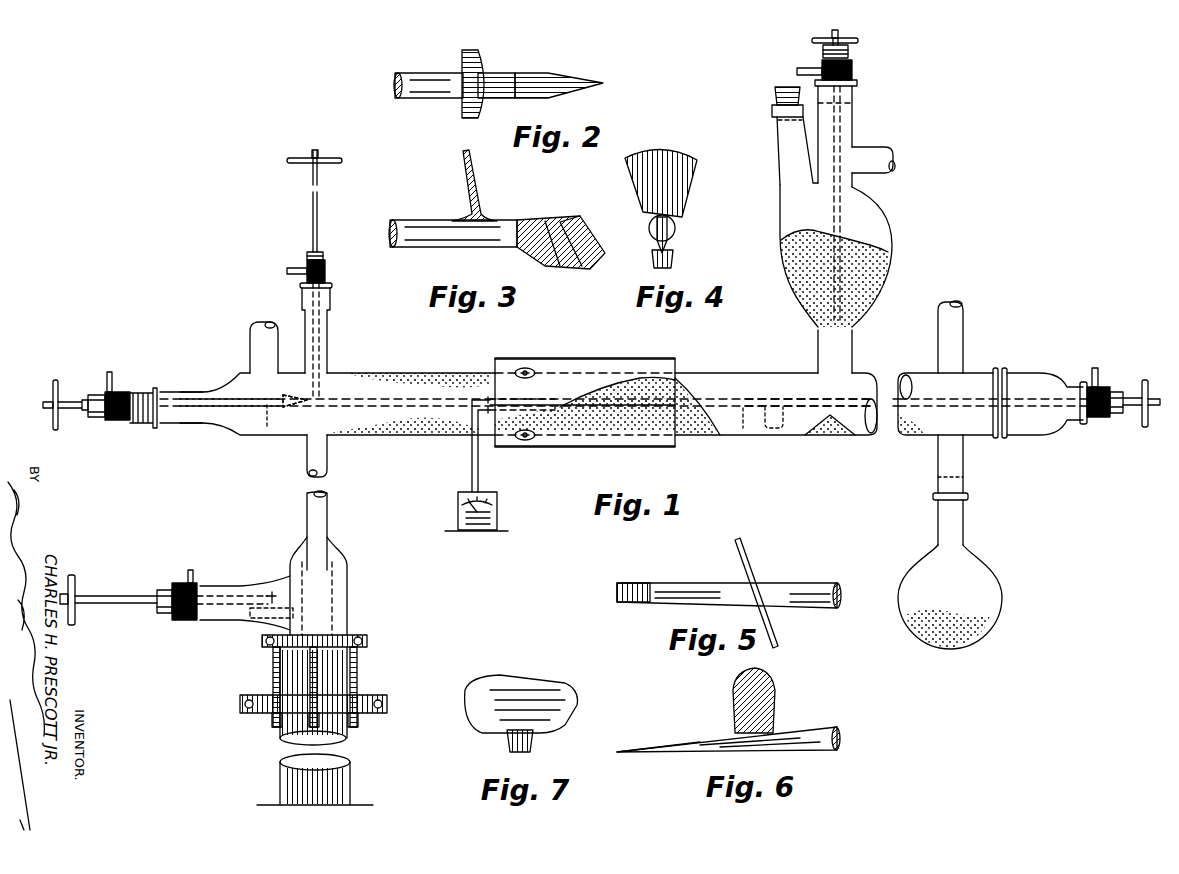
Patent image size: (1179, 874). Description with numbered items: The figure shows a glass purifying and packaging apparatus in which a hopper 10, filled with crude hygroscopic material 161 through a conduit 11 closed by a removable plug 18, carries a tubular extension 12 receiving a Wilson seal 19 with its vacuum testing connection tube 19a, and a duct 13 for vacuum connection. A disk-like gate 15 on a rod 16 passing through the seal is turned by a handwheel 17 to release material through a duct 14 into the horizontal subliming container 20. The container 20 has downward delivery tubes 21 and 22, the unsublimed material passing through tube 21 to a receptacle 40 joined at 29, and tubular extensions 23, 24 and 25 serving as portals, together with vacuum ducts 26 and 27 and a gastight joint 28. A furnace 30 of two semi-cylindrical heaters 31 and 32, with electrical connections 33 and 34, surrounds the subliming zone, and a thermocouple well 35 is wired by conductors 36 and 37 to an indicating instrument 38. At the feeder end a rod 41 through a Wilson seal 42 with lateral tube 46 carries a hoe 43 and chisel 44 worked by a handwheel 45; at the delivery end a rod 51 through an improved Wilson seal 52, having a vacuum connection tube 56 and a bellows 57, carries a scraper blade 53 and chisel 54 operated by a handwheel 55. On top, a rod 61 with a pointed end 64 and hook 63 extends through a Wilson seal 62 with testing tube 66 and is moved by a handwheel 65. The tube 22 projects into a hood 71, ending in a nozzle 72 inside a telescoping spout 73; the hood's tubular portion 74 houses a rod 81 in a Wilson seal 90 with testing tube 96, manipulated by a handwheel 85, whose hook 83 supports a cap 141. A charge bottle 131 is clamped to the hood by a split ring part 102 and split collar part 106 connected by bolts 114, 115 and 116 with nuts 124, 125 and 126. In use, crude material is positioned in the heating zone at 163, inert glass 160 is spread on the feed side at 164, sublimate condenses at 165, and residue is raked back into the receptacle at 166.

In FIG. 1, the hopper 10 is at (872, 222).
In FIG. 1, the conduit 11 is at (790, 160).
In FIG. 1, the tubular extension 12 is at (848, 118).
In FIG. 1, the duct 13 is at (875, 160).
In FIG. 1, the duct 14 is at (820, 345).
In FIG. 1, the disk-like gate 15 is at (838, 326).
In FIG. 1, the rod 16 is at (842, 205).
In FIG. 1, the handwheel 17 is at (860, 41).
In FIG. 1, the removable plug 18 is at (775, 92).
In FIG. 1, the Wilson seal 19 is at (856, 68).
In FIG. 1, the vacuum testing connection tube 19a is at (805, 68).
In FIG. 1, the subliming container 20 is at (735, 370).
In FIG. 1, the delivery tube 21 is at (965, 460).
In FIG. 1, the delivery tube 22 is at (322, 510).
In FIG. 1, the tubular extension 23 is at (1050, 380).
In FIG. 1, the tubular extension 24 is at (215, 420).
In FIG. 1, the tubular extension 25 is at (328, 330).
In FIG. 1, the duct 26 is at (958, 330).
In FIG. 1, the duct 27 is at (252, 338).
In FIG. 1, the gastight joint 28 is at (1003, 366).
In FIG. 1, the joint 29 is at (970, 497).
In FIG. 1, the furnace 30 is at (667, 356).
In FIG. 1, the electrical resistance heater 31 is at (575, 446).
In FIG. 1, the electrical resistance heater 32 is at (612, 358).
In FIG. 1, the electrical connection 33 is at (525, 441).
In FIG. 1, the electrical connection 34 is at (527, 368).
In FIG. 1, the thermocouple well 35 is at (488, 396).
In FIG. 1, the conductor 36 is at (471, 472).
In FIG. 1, the conductor 37 is at (479, 474).
In FIG. 1, the indicating and/or recording instrument 38 is at (458, 506).
In FIG. 1, the receptacle 40 is at (975, 580).
In FIG. 1, the rod 41 is at (800, 410).
In FIG. 5, the rod 41 is at (818, 583).
In FIG. 6, the rod 41 is at (818, 730).
In FIG. 1, the Wilson seal 42 is at (1098, 420).
In FIG. 1, the hoe 43 is at (772, 430).
In FIG. 5, the hoe 43 is at (755, 568).
In FIG. 6, the hoe 43 is at (772, 700).
In FIG. 7, the hoe 43 is at (560, 682).
In FIG. 1, the chisel 44 is at (745, 430).
In FIG. 5, the chisel 44 is at (646, 582).
In FIG. 6, the chisel 44 is at (660, 748).
In FIG. 7, the chisel 44 is at (535, 740).
In FIG. 1, the handwheel 45 is at (1146, 430).
In FIG. 1, the lateral tube 46 is at (1098, 370).
In FIG. 1, the rod 51 is at (232, 410).
In FIG. 2, the rod 51 is at (422, 78).
In FIG. 3, the rod 51 is at (420, 220).
In FIG. 1, the improved Wilson seal 52 is at (115, 428).
In FIG. 1, the scraper blade 53 is at (266, 425).
In FIG. 2, the scraper blade 53 is at (482, 72).
In FIG. 3, the scraper blade 53 is at (476, 184).
In FIG. 4, the scraper blade 53 is at (688, 162).
In FIG. 1, the chisel 54 is at (300, 408).
In FIG. 2, the chisel 54 is at (560, 78).
In FIG. 3, the chisel 54 is at (558, 216).
In FIG. 4, the chisel 54 is at (669, 236).
In FIG. 1, the handwheel 55 is at (57, 380).
In FIG. 1, the vacuum connection tube 56 is at (112, 380).
In FIG. 1, the flexible thin metal bellows 57 is at (143, 425).
In FIG. 1, the rod 61 is at (318, 225).
In FIG. 1, the Wilson seal 62 is at (328, 270).
In FIG. 1, the hook 63 is at (320, 385).
In FIG. 1, the pointed end 64 is at (320, 400).
In FIG. 1, the handwheel 65 is at (335, 160).
In FIG. 1, the vacuum testing connection tube 66 is at (292, 268).
In FIG. 1, the hood 71 is at (347, 540).
In FIG. 1, the nozzle 72 is at (350, 570).
In FIG. 1, the telescoping spout 73 is at (335, 600).
In FIG. 1, the tubular portion 74 is at (240, 586).
In FIG. 1, the rod 81 is at (113, 595).
In FIG. 1, the hook 83 is at (274, 590).
In FIG. 1, the handwheel 85 is at (74, 576).
In FIG. 1, the Wilson seal 90 is at (185, 620).
In FIG. 1, the vacuum-testing tube 96 is at (191, 570).
In FIG. 1, the split ring part 102 is at (365, 712).
In FIG. 1, the split collar part 106 is at (367, 641).
In FIG. 1, the bolt 114 is at (273, 670).
In FIG. 1, the bolt 115 is at (310, 672).
In FIG. 1, the bolt 116 is at (357, 666).
In FIG. 1, the nut 124 is at (272, 720).
In FIG. 1, the nut 125 is at (320, 725).
In FIG. 1, the nut 126 is at (358, 722).
In FIG. 1, the charge bottle 131 is at (345, 690).
In FIG. 1, the cap 141 is at (255, 615).
In FIG. 1, the inert material 160 is at (910, 440).
In FIG. 1, the crude hygroscopic material 161 is at (840, 440).
In FIG. 1, the pile of crude material in heating zone 163 is at (640, 430).
In FIG. 1, the layer of glass 164 is at (705, 440).
In FIG. 1, the condensed sublimate 165 is at (410, 450).
In FIG. 1, the raked residue 166 is at (970, 630).